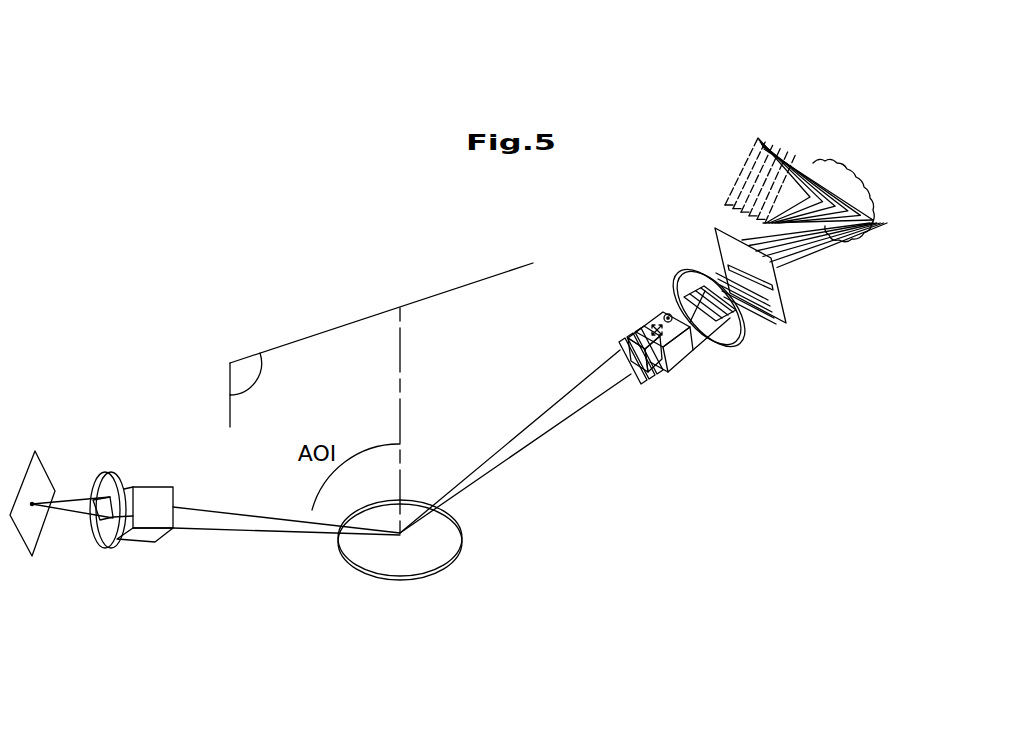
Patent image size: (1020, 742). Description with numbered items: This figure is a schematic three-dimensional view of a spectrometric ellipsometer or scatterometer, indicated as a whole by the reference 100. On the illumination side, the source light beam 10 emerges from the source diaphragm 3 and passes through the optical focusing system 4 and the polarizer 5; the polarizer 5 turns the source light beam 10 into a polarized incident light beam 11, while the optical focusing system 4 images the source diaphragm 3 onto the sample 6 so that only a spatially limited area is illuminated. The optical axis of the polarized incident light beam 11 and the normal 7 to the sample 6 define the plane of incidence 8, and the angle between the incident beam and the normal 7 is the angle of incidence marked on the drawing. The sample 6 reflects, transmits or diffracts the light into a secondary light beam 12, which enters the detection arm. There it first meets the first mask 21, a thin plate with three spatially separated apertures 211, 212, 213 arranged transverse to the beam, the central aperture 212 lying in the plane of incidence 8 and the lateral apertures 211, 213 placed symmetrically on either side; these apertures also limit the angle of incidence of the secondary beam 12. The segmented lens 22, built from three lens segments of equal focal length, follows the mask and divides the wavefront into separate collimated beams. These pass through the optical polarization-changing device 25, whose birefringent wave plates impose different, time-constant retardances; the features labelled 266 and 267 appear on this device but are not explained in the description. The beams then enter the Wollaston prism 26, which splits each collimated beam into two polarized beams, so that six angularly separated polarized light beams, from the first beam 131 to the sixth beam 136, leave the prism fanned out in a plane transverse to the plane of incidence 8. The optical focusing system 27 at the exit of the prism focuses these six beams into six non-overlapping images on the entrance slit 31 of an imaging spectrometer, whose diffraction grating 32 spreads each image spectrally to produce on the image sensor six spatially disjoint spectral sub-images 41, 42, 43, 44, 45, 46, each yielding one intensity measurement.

The spectrometer system 100 is at (247, 305).
The source diaphragm 3 is at (43, 533).
The source light beam 10 is at (70, 497).
The optical focusing system 4 is at (102, 547).
The polarizer 5 is at (145, 486).
The polarized incident light beam 11 is at (208, 530).
The sample 6 is at (388, 578).
The normal to the sample 7 is at (400, 343).
The plane of incidence 8 is at (330, 327).
The secondary light beam 12 is at (500, 453).
The first mask 21 is at (601, 398).
The lateral aperture 211 is at (620, 355).
The central aperture 212 is at (628, 372).
The lateral aperture 213 is at (640, 383).
The segmented lens 22 is at (665, 362).
The optical polarization-changing device 25 is at (649, 324).
The adjustment marking 266 is at (652, 323).
The adjustment screw 267 is at (667, 307).
The polarized light beam 131 is at (700, 280).
The Wollaston prism 26 is at (700, 352).
The optical focusing system 27 is at (750, 338).
The entrance slit 31 is at (718, 226).
The polarized light beam 136 is at (757, 314).
The diffraction grating 32 is at (843, 253).
The spectral sub-image 41 is at (758, 137).
The spectral sub-image 42 is at (767, 142).
The spectral sub-image 43 is at (773, 145).
The spectral sub-image 44 is at (780, 148).
The spectral sub-image 45 is at (788, 152).
The spectral sub-image 46 is at (797, 153).